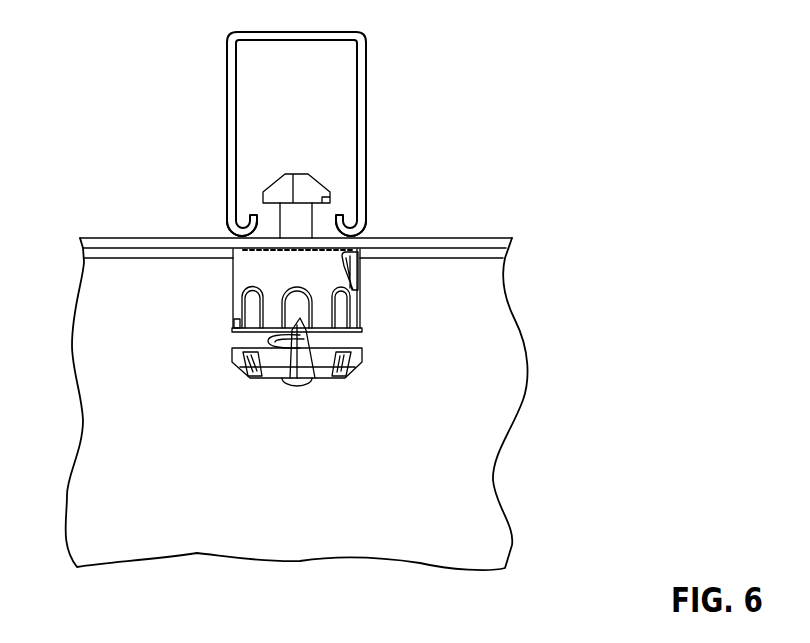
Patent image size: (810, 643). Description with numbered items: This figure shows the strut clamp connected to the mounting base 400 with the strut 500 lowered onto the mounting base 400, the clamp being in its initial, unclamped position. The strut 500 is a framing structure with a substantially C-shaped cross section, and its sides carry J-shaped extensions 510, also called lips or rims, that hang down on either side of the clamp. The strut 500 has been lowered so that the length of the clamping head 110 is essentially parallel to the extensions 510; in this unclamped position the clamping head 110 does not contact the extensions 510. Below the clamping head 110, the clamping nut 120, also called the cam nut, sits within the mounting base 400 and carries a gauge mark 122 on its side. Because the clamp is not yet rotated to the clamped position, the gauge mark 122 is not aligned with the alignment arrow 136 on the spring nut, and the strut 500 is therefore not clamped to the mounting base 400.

The framing structure 500 is at (365, 107).
The J-shaped extensions 510 is at (233, 226).
The clamping head 110 is at (303, 195).
The mounting base 400 is at (120, 242).
The clamping nut 120 is at (240, 273).
The gauge mark 122 is at (358, 272).
The alignment arrows 136 is at (335, 378).